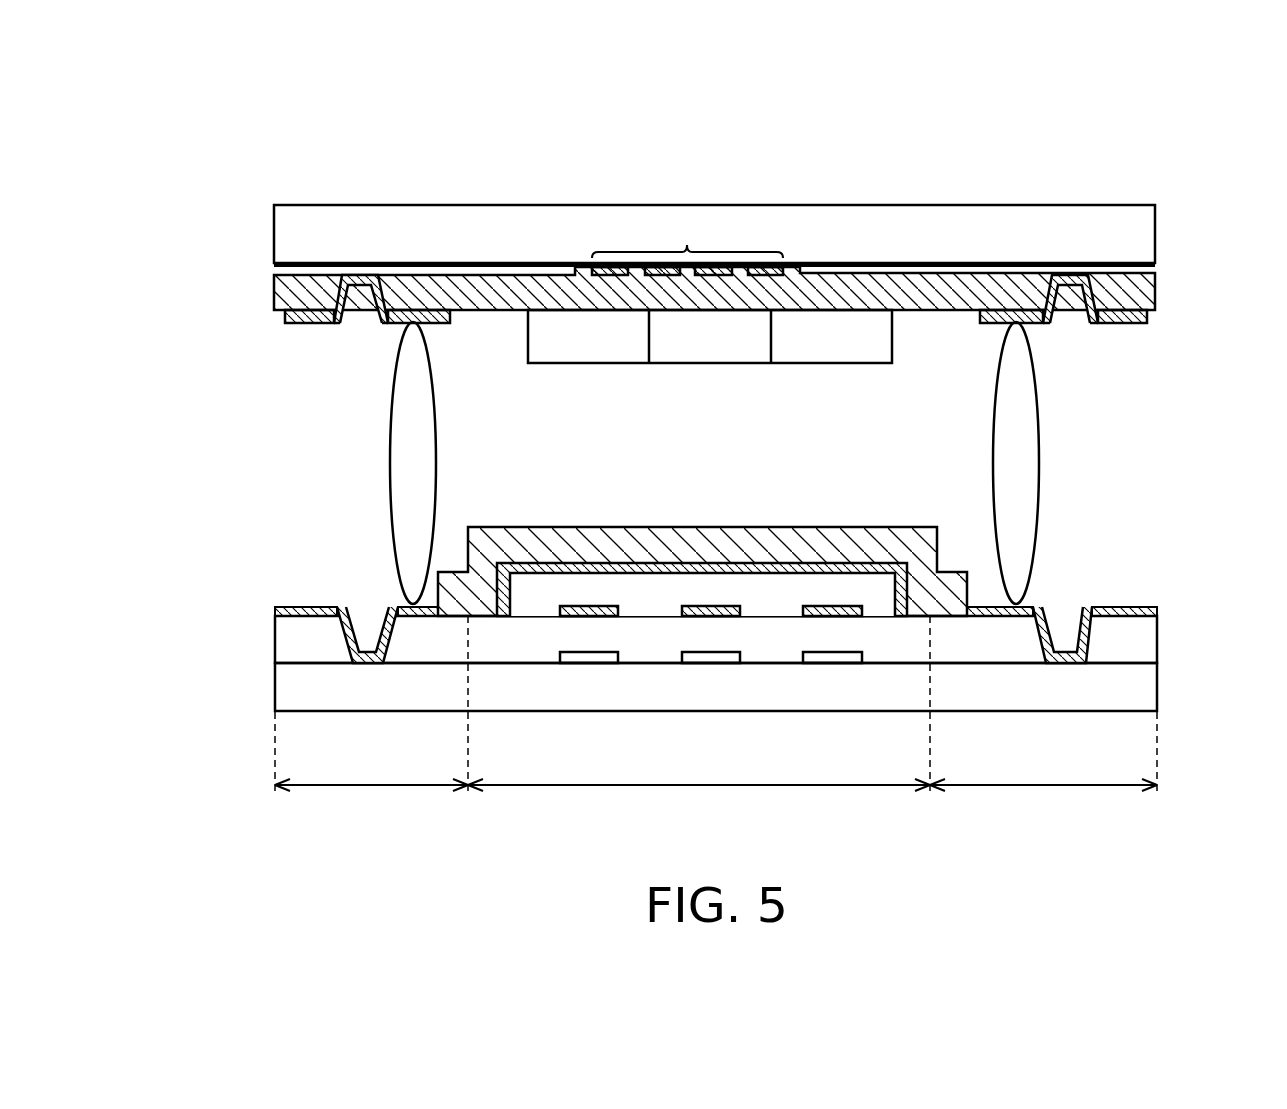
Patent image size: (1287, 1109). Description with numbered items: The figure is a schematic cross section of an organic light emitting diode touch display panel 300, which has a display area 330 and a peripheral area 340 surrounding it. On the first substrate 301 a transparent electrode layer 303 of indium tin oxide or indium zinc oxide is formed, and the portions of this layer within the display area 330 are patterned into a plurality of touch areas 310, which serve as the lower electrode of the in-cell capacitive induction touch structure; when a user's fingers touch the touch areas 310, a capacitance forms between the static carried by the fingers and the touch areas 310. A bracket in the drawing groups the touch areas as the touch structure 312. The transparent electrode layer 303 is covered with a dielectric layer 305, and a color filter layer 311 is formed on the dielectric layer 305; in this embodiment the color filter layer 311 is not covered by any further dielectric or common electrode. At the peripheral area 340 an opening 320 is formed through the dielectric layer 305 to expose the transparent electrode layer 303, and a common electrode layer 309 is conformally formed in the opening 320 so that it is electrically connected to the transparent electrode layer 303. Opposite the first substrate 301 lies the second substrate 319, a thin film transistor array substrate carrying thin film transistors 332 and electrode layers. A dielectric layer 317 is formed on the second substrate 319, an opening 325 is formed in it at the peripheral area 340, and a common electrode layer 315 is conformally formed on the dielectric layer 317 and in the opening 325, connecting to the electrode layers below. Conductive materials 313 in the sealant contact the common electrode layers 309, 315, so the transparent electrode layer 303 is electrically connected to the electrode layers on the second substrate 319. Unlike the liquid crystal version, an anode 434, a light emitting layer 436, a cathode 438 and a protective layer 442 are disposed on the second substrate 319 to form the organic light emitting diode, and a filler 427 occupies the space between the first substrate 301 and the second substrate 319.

The touch display panel 300 is at (1147, 150).
The first substrate 301 is at (1150, 237).
The transparent electrode layer 303 is at (1150, 265).
The dielectric layer 305 is at (1150, 293).
The common electrode layer 309 is at (1145, 320).
The touch areas 310 is at (610, 268).
The color filter layer 311 is at (527, 338).
The touch sensing layer 312 is at (687, 245).
The conductive materials 313 is at (1030, 462).
The common electrode layer 315 is at (1158, 610).
The dielectric layer 317 is at (1158, 647).
The second substrate 319 is at (1158, 690).
The opening 320 is at (360, 313).
The opening 325 is at (368, 613).
The display area 330 is at (699, 804).
The thin film transistors 332 is at (833, 658).
The peripheral area 340 is at (716, 723).
The filler 427 is at (840, 450).
The anode 434 is at (807, 616).
The light emitting layer 436 is at (528, 598).
The cathode 438 is at (497, 616).
The protective layer 442 is at (520, 537).